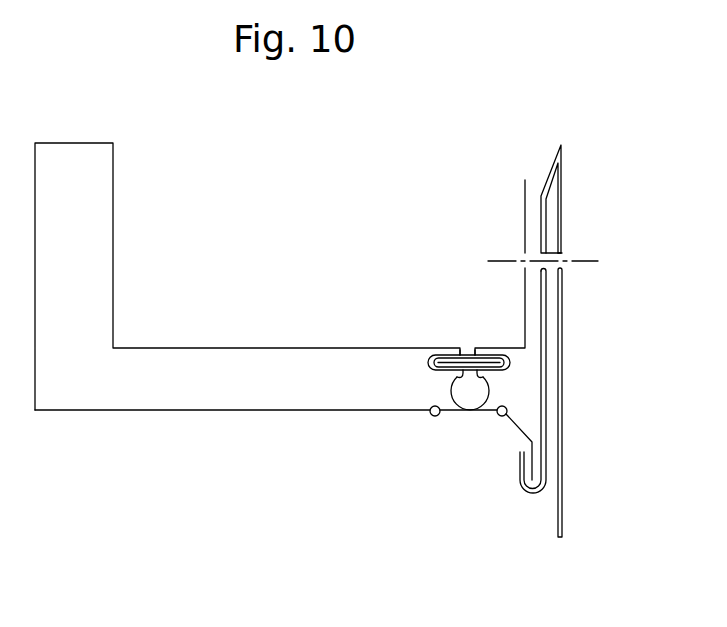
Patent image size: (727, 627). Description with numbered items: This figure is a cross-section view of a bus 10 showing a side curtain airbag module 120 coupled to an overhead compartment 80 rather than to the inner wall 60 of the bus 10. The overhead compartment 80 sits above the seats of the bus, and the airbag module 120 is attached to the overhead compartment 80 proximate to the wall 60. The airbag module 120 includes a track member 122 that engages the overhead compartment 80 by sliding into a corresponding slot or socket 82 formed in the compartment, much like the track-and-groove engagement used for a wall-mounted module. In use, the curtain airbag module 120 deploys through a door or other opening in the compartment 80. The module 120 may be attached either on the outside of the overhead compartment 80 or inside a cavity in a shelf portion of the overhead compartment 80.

The bus 10 is at (392, 210).
The overhead compartment 80 is at (207, 370).
The slot or socket 82 is at (430, 361).
The track member 122 is at (457, 358).
The side curtain airbag module 120 is at (470, 398).
The inner wall 60 is at (562, 497).